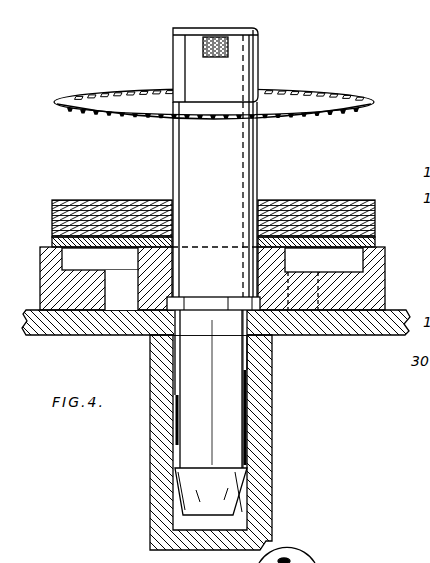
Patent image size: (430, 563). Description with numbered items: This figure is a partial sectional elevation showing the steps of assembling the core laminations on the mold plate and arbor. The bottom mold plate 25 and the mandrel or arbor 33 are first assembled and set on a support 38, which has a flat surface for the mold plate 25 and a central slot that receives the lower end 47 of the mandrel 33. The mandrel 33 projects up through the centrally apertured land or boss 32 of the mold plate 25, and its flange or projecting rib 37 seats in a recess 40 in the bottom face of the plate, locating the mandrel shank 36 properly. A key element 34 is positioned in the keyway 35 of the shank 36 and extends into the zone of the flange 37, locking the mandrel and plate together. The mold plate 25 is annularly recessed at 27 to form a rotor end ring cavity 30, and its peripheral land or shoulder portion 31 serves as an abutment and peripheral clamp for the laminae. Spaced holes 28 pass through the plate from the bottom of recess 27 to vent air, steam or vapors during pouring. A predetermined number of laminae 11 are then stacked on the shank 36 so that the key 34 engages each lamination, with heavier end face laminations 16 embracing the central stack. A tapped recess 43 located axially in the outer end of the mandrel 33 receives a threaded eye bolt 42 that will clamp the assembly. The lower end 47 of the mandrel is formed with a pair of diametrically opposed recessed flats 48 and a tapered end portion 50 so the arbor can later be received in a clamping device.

The laminae 11 is at (343, 97).
The end face laminations 16 is at (53, 242).
The bottom mold plate 25 is at (362, 306).
The annular recess 27 is at (336, 270).
The spaced holes 28 is at (118, 300).
The rotor end ring cavity 30 is at (363, 240).
The peripheral land or shoulder portion 31 is at (372, 262).
The centrally apertured land or boss 32 is at (153, 255).
The mandrel or arbor 33 is at (236, 368).
The key element 34 is at (262, 40).
The keyway 35 is at (252, 70).
The mandrel shank 36 is at (208, 175).
The flange or projecting rib 37 is at (210, 308).
The support 38 is at (162, 432).
The recess 40 is at (180, 296).
The threaded eye bolt 42 is at (311, 561).
The tapped recess 43 is at (202, 43).
The lower end 47 is at (247, 463).
The recessed flats 48 is at (250, 420).
The tapered end portion 50 is at (240, 500).